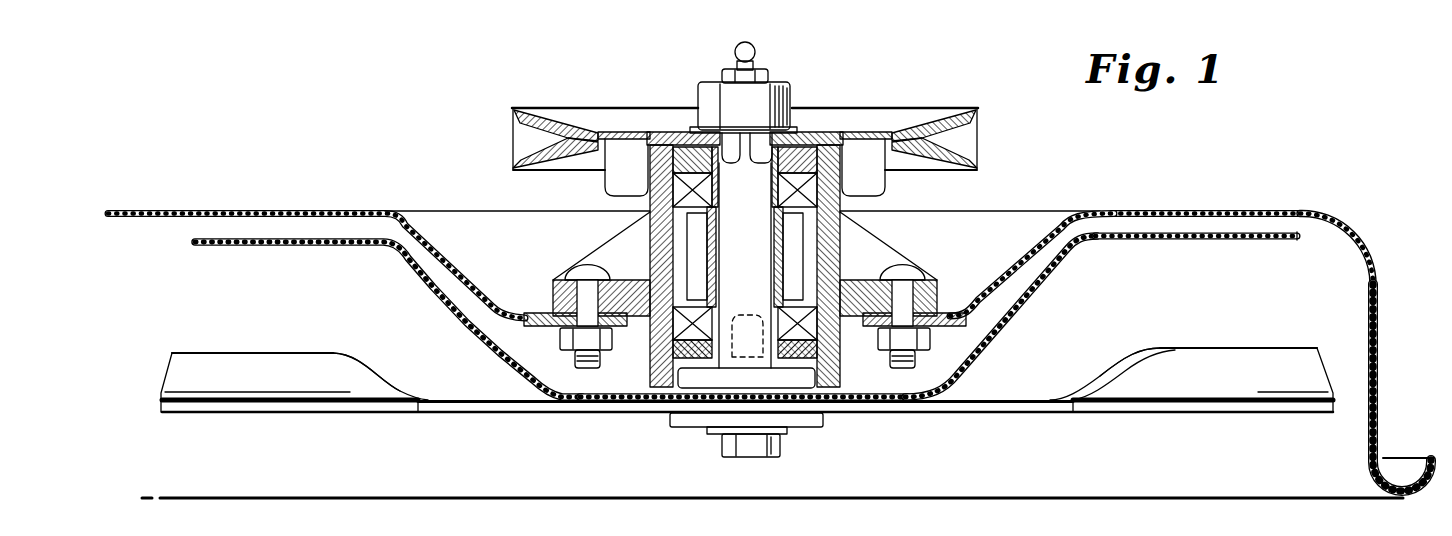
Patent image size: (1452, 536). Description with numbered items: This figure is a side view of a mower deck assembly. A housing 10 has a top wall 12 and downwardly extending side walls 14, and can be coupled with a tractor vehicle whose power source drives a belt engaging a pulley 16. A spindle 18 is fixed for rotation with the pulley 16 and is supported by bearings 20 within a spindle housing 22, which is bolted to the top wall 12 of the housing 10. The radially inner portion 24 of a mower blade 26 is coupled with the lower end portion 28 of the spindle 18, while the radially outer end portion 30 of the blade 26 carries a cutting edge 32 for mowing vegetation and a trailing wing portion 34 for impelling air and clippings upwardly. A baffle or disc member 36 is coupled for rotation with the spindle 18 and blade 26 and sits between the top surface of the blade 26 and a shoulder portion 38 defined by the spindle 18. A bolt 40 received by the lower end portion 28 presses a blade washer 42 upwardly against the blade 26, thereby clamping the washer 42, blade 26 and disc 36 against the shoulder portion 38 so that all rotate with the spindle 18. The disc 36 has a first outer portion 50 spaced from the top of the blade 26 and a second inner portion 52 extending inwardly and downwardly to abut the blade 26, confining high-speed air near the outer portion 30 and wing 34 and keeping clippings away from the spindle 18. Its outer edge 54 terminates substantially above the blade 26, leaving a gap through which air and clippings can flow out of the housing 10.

The housing 10 is at (1389, 261).
The top wall 12 is at (1099, 209).
The side walls 14 is at (1380, 325).
The pulley 16 is at (958, 106).
The spindle 18 is at (756, 247).
The bearings 20 is at (776, 186).
The spindle housing 22 is at (870, 267).
The radially inner portion 24 is at (855, 414).
The mower blade 26 is at (954, 418).
The lower end portion 28 is at (680, 350).
The radially outer end portion 30 is at (189, 420).
The cutting edge 32 is at (311, 418).
The trailing wing portion 34 is at (336, 355).
The disc member 36 is at (1056, 286).
The shoulder portion 38 is at (697, 380).
The bolt 40 is at (762, 457).
The blade washer 42 is at (810, 433).
The first outer portion 50 is at (1223, 240).
The second inner portion 52 is at (990, 334).
The outer edge 54 is at (1301, 238).